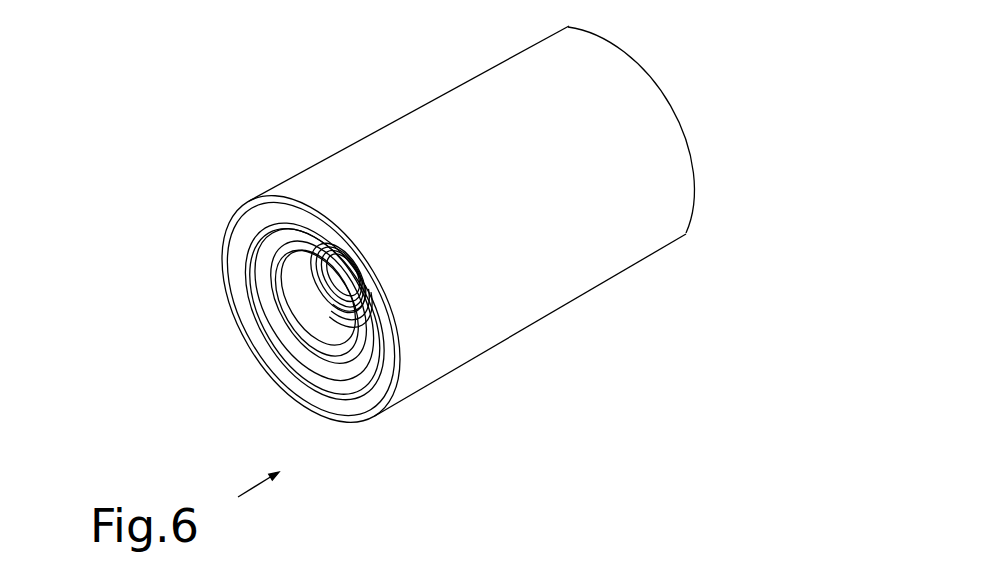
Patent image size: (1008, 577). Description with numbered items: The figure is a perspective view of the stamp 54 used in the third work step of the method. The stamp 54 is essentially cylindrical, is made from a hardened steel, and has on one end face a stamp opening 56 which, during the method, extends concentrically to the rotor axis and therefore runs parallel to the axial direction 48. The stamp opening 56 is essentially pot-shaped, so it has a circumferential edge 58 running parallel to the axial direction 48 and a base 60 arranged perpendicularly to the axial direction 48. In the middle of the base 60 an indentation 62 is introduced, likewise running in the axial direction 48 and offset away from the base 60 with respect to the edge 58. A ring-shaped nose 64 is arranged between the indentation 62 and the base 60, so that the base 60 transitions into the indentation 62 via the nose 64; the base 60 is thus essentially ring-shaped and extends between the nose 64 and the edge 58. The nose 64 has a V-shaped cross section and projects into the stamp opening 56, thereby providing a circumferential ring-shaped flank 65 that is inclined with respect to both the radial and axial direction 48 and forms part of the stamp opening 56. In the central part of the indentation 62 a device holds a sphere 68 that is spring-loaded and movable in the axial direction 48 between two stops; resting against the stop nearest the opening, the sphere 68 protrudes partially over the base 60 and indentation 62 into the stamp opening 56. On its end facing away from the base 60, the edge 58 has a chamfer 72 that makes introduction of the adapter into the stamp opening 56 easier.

The axial direction 48 is at (258, 486).
The stamp 54 is at (565, 288).
The stamp opening 56 is at (283, 328).
The circumferential edge 58 is at (263, 286).
The base 60 is at (290, 258).
The indentation 62 is at (313, 232).
The ring-shaped nose 64 is at (372, 340).
The flank 65 is at (352, 343).
The sphere 68 is at (348, 283).
The chamfer 72 is at (307, 383).